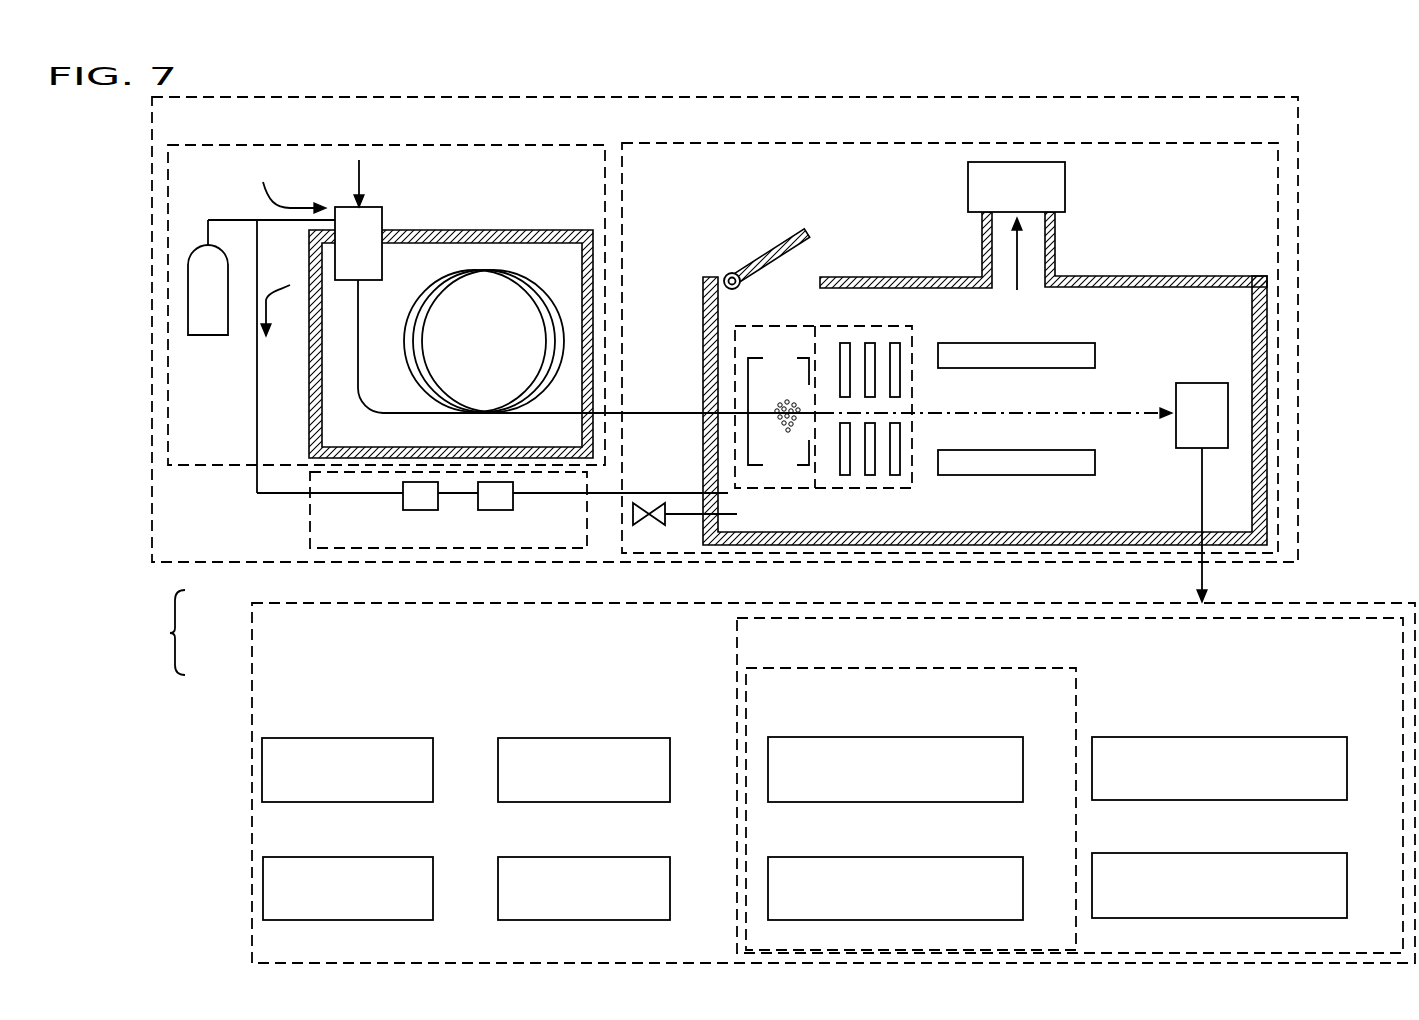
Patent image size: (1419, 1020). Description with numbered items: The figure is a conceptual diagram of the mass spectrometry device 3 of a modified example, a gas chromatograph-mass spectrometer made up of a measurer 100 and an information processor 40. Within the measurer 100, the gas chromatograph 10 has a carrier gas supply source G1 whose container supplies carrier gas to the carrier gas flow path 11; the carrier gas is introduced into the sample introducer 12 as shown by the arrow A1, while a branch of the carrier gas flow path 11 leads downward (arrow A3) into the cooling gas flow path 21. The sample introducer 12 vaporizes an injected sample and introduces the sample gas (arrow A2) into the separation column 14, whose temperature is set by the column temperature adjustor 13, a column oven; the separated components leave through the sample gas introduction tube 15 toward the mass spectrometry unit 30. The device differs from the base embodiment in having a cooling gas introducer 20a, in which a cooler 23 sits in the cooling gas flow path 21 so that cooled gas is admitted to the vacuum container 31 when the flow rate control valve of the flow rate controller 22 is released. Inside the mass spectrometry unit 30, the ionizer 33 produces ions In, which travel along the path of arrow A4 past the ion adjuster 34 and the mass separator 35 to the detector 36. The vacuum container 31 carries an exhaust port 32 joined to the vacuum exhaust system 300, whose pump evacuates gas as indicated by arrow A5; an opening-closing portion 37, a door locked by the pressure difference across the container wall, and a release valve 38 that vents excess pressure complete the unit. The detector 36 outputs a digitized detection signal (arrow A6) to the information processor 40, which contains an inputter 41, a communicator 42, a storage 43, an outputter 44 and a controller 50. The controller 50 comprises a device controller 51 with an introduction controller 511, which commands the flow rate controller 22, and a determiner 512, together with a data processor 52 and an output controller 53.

The mass spectrometry device 3 is at (162, 632).
The measurer 100 is at (212, 563).
The gas chromatograph 10 is at (183, 465).
The carrier gas supply source G1 is at (203, 335).
The carrier gas flow path 11 is at (282, 219).
The sample introducer 12 is at (376, 207).
The column temperature adjustor 13 is at (455, 230).
The separation column 14 is at (493, 270).
The sample gas introduction tube 15 is at (520, 413).
The arrow A1 is at (284, 184).
The arrow A2 is at (355, 174).
The gas flow to flow path A3 is at (281, 297).
The cooling gas introducer 20a is at (310, 510).
The cooling gas flow path 21 is at (382, 494).
The flow rate controller 22 is at (513, 503).
The cooler 23 is at (438, 503).
The mass spectrometry unit 30 is at (697, 142).
The vacuum container 31 is at (832, 277).
The exhaust port 32 is at (984, 246).
The ionizer 33 is at (815, 338).
The ion adjuster 34 is at (885, 333).
The mass separator 35 is at (948, 343).
The detector 36 is at (1195, 383).
The opening-closing portion 37 is at (775, 250).
The release valve 38 is at (649, 503).
The vacuum exhaust system 300 is at (1065, 190).
The arrow A4 is at (1122, 410).
The arrow A5 is at (1050, 282).
The arrow A6 is at (1205, 579).
The ions In is at (786, 408).
The information processor 40 is at (250, 668).
The inputter 41 is at (392, 738).
The communicator 42 is at (395, 857).
The storage 43 is at (630, 738).
The outputter 44 is at (628, 857).
The controller 50 is at (736, 655).
The device controller 51 is at (1078, 680).
The introduction controller 511 is at (995, 737).
The determiner 512 is at (993, 857).
The data processor 52 is at (1320, 737).
The output controller 53 is at (1320, 857).